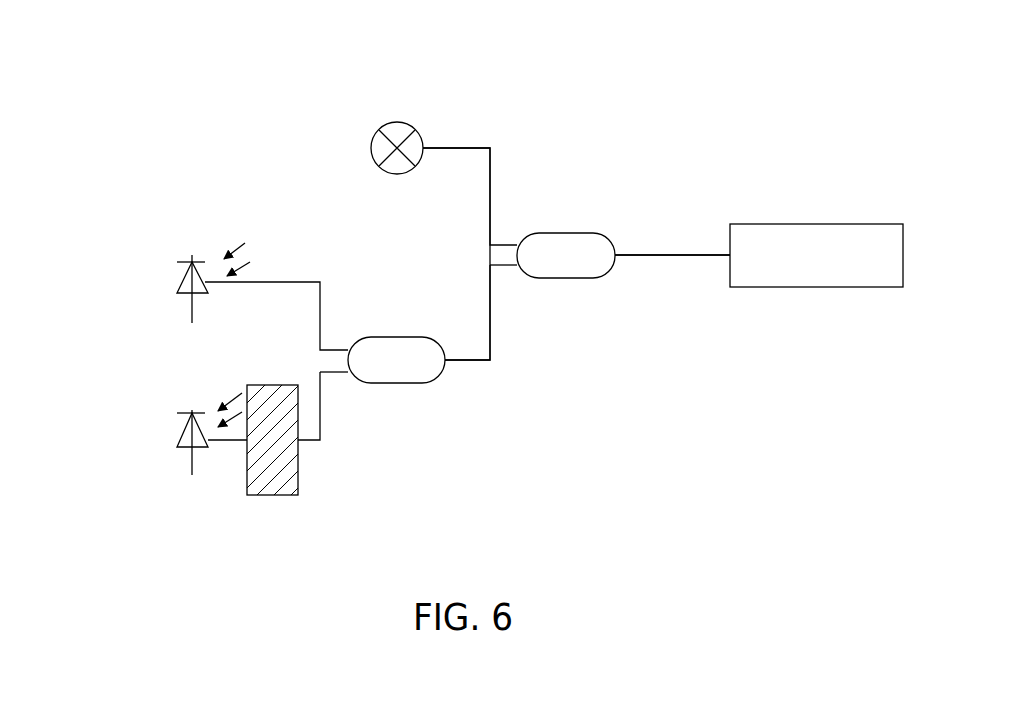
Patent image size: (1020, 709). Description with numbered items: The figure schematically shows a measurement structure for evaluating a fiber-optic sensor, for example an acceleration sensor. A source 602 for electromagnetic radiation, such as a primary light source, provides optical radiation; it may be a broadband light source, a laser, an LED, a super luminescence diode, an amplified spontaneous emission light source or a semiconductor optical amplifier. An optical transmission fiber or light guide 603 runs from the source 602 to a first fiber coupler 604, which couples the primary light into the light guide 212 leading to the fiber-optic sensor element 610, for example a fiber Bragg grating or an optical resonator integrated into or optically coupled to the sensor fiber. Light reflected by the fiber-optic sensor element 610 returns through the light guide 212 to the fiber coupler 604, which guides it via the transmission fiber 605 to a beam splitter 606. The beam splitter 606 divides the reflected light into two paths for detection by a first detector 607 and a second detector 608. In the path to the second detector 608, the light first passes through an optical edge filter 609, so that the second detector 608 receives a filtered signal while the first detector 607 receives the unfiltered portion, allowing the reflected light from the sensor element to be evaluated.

The source 602 is at (397, 122).
The light guide 603 is at (473, 148).
The first fiber coupler 604 is at (569, 233).
The light guide 212 is at (674, 255).
The fiber-optic sensor element 610 is at (830, 224).
The beam splitter 606 is at (392, 383).
The transmission fiber 605 is at (478, 360).
The first detector 607 is at (192, 302).
The second detector 608 is at (192, 460).
The optical edge filter 609 is at (273, 385).